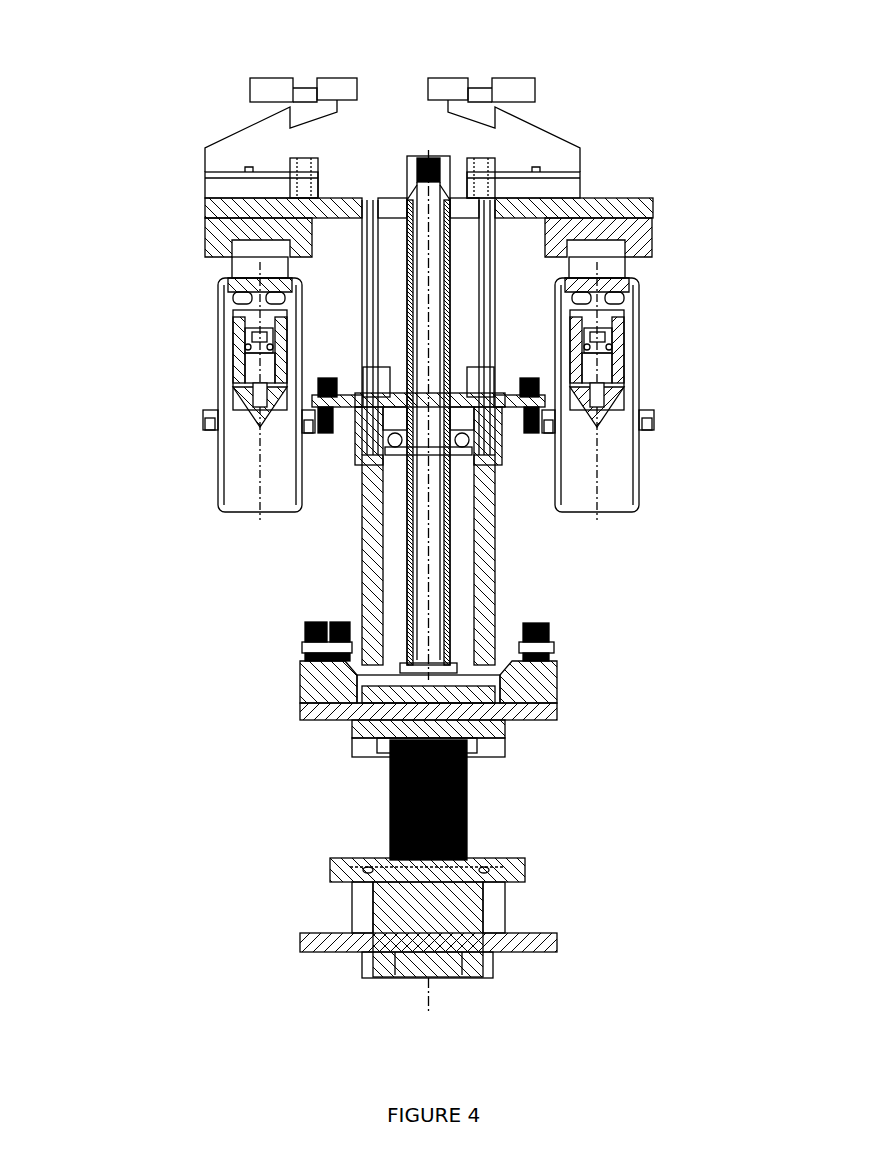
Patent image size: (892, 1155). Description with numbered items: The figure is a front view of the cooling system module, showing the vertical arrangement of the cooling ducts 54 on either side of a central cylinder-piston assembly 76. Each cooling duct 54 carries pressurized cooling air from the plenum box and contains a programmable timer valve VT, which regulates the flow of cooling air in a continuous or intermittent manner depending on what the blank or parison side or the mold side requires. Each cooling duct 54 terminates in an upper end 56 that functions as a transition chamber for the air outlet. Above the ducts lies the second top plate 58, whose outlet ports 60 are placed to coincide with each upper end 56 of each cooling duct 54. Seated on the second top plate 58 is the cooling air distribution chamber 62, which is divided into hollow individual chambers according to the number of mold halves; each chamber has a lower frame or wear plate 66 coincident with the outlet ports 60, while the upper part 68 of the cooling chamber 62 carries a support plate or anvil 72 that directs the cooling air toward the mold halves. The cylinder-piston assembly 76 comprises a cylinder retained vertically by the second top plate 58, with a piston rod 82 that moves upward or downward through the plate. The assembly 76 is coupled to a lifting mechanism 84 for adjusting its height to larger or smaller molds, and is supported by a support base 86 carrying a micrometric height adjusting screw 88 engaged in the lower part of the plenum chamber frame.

The cooling duct 54 is at (218, 470).
The upper end 56 is at (252, 232).
The second top plate 58 is at (627, 210).
The outlet port 60 is at (278, 207).
The cooling air distribution chamber 62 is at (240, 143).
The lower frame or wear plate 66 is at (217, 194).
The upper part of the cooling chamber 68 is at (317, 104).
The support plate or anvil 72 is at (331, 85).
The cylinder-piston assembly 76 is at (511, 578).
The piston rod 82 is at (432, 558).
The lifting mechanism 84 is at (507, 817).
The support base 86 is at (528, 712).
The micrometric height adjusting screw 88 is at (463, 830).
The timer valve VT is at (245, 365).